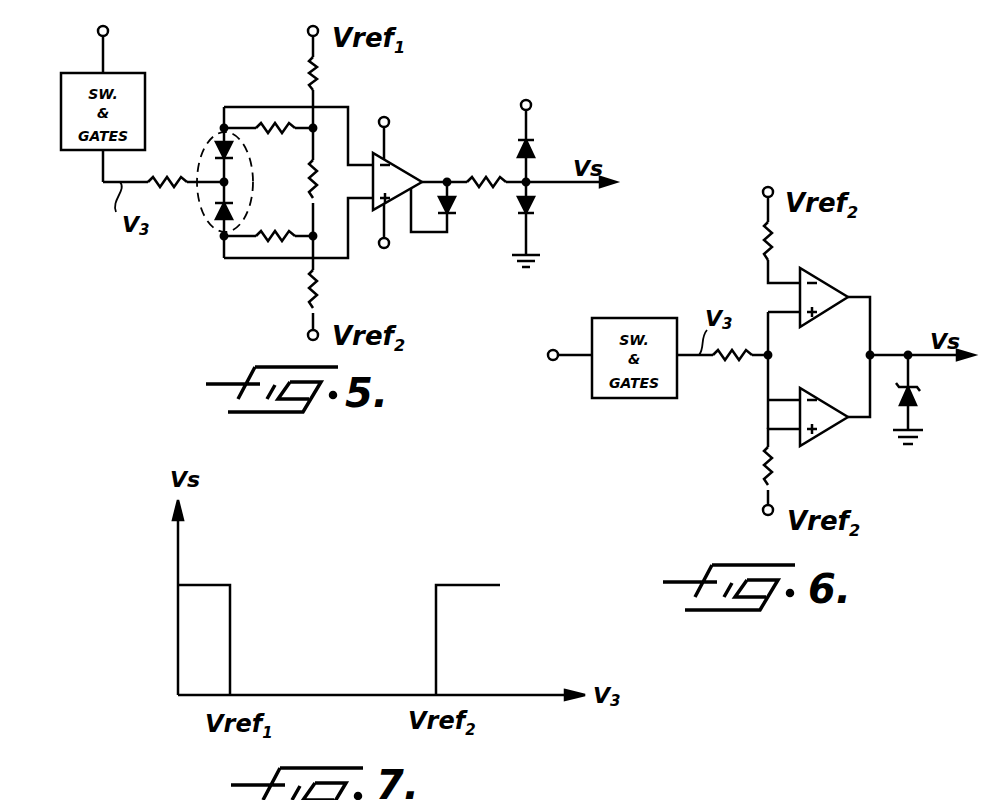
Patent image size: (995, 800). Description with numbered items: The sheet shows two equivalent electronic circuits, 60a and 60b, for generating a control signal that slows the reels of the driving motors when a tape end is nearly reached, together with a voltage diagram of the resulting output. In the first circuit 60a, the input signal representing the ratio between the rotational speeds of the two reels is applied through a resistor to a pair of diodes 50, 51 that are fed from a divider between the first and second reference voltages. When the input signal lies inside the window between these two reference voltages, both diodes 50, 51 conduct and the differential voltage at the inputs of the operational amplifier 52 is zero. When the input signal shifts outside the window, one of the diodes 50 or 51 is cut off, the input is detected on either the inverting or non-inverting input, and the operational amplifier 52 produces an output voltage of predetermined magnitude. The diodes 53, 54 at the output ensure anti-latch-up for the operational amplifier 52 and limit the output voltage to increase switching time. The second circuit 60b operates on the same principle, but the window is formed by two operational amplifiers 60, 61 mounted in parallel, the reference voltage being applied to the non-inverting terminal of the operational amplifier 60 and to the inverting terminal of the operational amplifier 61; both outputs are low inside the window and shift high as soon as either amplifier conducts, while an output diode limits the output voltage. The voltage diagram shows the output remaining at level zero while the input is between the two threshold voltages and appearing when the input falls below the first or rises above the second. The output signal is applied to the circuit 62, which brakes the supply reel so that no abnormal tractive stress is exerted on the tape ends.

In FIG. 5, the diode 50 is at (210, 144).
In FIG. 5, the diode 51 is at (210, 222).
In FIG. 5, the operational amplifier 52 is at (393, 192).
In FIG. 5, the diode 53 is at (590, 118).
In FIG. 5, the diode 54 is at (534, 204).
In FIG. 5, the circuit 60a is at (486, 130).
In FIG. 6, the operational amplifier 60 is at (862, 262).
In FIG. 6, the operational amplifier 61 is at (835, 431).
In FIG. 6, the circuit 60b is at (845, 367).
In FIG. 6, the circuit 62 is at (929, 396).